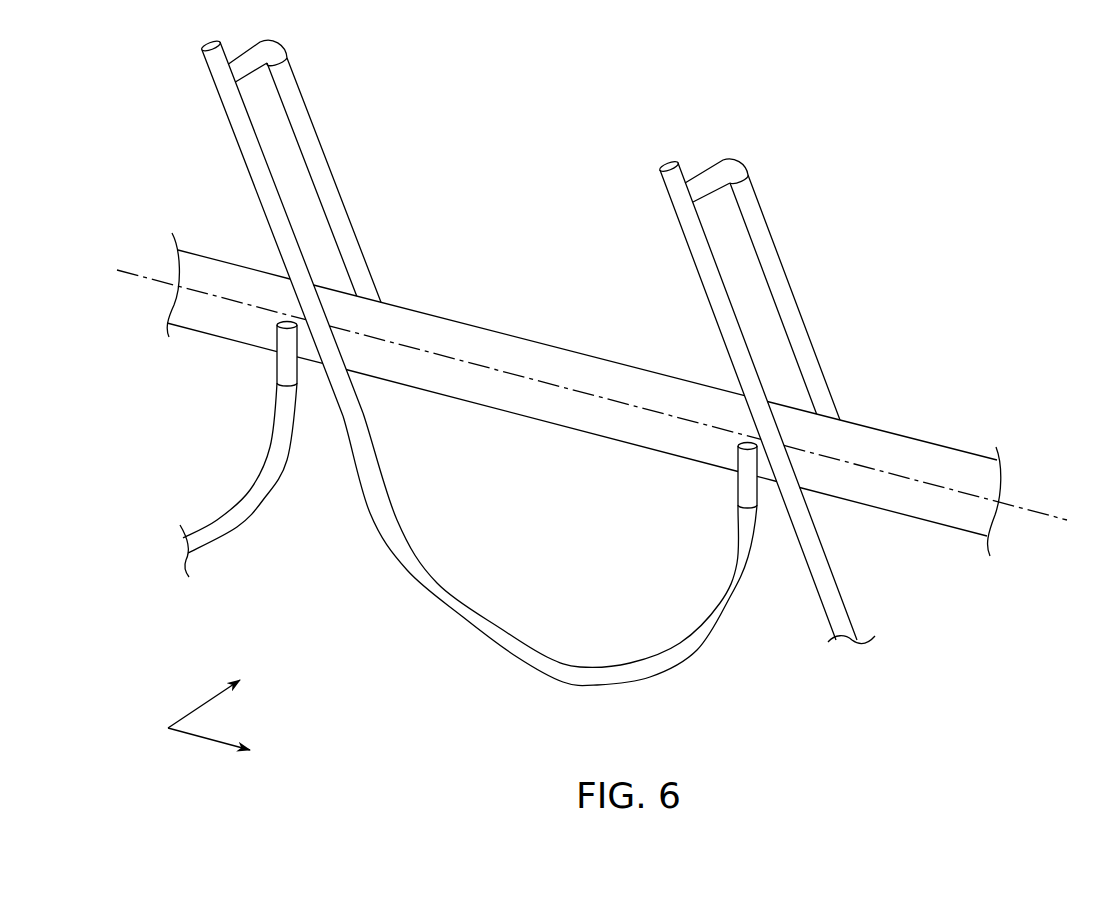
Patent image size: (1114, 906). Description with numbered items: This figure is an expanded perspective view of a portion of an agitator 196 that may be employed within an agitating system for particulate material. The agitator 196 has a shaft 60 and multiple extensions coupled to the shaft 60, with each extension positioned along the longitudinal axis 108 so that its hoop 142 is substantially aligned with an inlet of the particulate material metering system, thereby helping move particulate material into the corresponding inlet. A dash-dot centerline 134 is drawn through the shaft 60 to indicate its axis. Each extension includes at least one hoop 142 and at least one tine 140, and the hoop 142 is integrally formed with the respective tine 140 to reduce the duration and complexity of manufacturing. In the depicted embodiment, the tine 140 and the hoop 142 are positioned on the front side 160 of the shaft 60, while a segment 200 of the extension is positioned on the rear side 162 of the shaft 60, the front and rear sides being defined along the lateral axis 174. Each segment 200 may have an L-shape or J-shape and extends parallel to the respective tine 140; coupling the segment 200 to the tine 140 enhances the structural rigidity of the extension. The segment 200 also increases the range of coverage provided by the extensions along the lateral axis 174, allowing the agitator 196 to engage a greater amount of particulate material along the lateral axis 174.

The shaft 60 is at (447, 325).
The longitudinal axis 134 is at (1036, 509).
The tine 140 is at (213, 60).
The hoop 142 is at (394, 520).
The front side 160 is at (192, 382).
The rear side 162 is at (626, 380).
The agitator 196 is at (419, 348).
The segment 200 is at (302, 133).
The lateral axis 174 is at (197, 708).
The longitudinal axis 108 is at (203, 740).